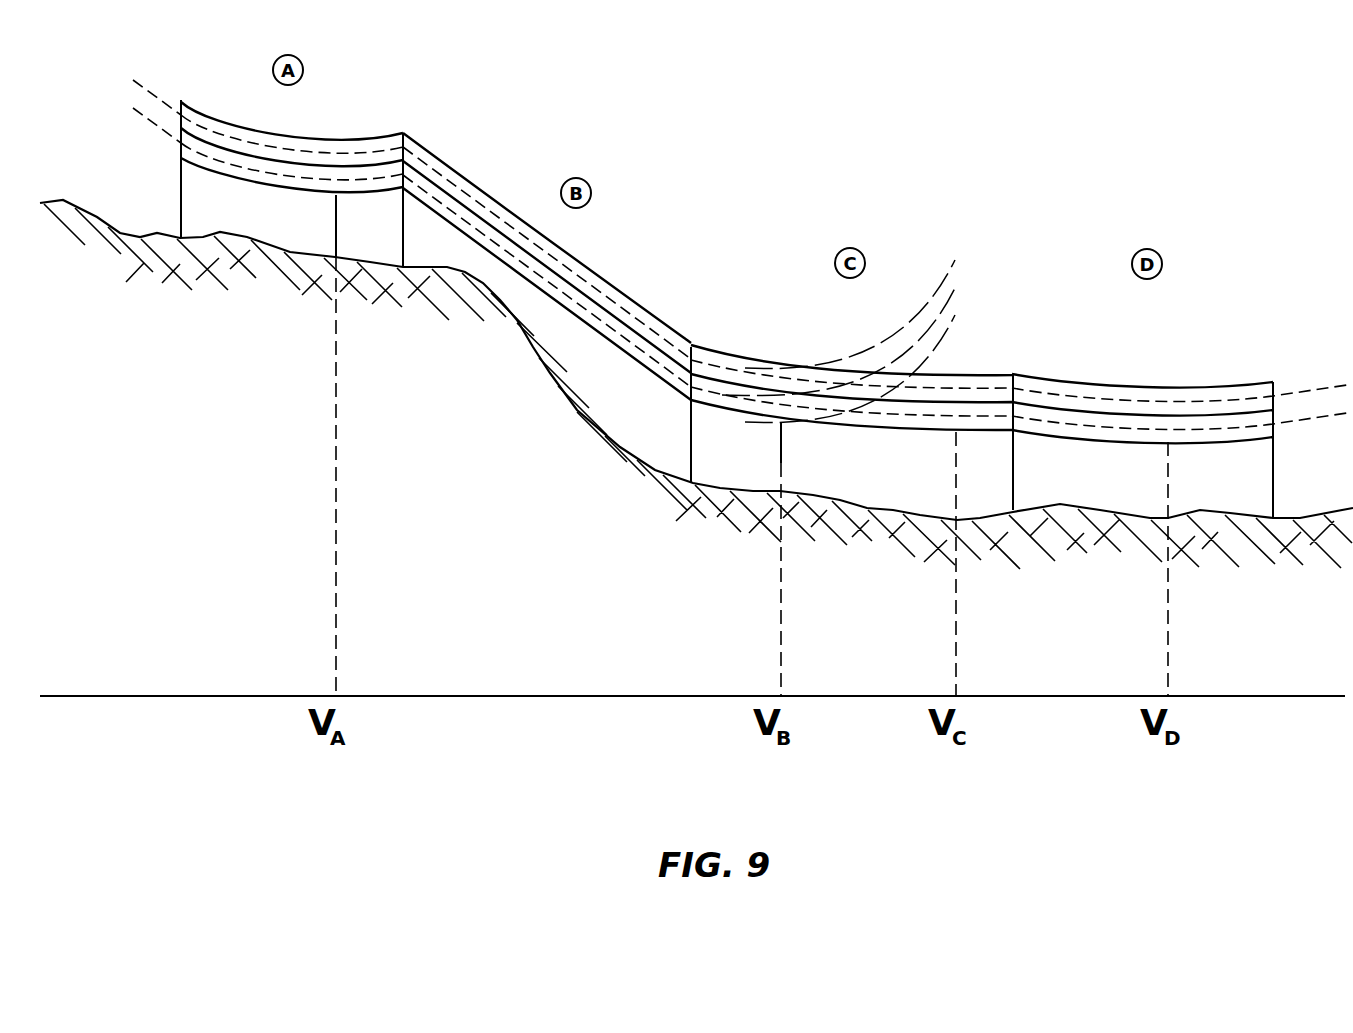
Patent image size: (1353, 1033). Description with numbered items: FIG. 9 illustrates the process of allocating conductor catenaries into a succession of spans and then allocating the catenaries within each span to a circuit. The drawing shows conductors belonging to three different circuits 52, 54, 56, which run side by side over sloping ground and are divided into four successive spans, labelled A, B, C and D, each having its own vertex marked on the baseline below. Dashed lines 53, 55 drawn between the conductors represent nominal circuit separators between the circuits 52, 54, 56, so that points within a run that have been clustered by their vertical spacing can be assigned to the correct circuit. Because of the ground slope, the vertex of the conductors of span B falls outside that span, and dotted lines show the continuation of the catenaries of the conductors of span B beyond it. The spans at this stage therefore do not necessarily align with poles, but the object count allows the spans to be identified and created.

The circuit 52 is at (260, 130).
The circuit 54 is at (222, 150).
The circuit 56 is at (188, 160).
The circuit separator 53 is at (1330, 387).
The circuit separator 55 is at (1297, 420).